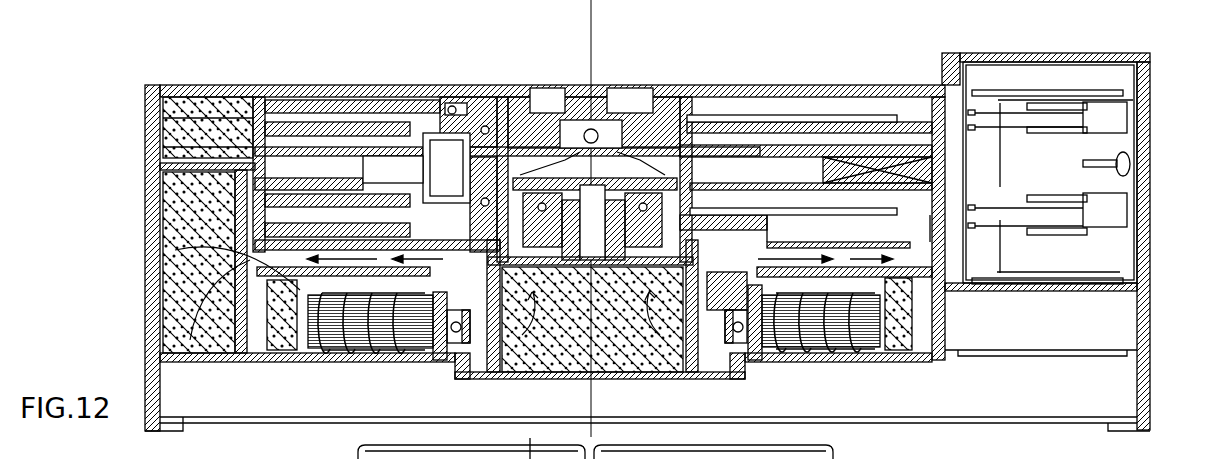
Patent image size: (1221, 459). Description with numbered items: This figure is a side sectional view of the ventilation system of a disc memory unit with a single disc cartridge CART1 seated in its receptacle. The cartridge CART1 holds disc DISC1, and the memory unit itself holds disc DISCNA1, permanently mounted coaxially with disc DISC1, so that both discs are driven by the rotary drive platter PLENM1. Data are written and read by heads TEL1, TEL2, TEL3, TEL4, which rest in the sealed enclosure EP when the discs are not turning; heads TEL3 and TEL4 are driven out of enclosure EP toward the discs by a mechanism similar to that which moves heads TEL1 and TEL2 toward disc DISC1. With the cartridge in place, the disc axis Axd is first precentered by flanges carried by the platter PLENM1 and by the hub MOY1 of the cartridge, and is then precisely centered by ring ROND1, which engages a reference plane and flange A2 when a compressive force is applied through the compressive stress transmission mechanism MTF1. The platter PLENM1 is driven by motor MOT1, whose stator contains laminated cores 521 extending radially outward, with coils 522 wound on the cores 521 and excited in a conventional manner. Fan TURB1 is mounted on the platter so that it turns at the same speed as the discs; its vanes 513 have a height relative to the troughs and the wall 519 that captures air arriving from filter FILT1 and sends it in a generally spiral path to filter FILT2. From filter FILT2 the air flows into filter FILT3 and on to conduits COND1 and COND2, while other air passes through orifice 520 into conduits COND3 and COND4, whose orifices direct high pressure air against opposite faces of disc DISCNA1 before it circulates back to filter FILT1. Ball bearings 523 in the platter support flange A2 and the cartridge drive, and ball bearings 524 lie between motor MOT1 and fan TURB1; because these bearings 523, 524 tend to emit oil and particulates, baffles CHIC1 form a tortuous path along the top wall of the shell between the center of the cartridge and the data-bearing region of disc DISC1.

The filter FILT1 is at (622, 370).
The filter FILT2 is at (222, 358).
The filter FILT3 is at (213, 105).
The conduit COND1 is at (272, 100).
The conduit COND2 is at (283, 128).
The conduit COND3 is at (165, 213).
The conduit COND4 is at (165, 262).
The hub MOY1 is at (418, 135).
The ring ROND1 is at (426, 170).
The baffles CHIC1 is at (725, 97).
The compressive stress transmission mechanism MTF1 is at (600, 110).
The axis of disc Axd is at (592, 45).
The flange A2 is at (692, 160).
The cartridge CART1 is at (795, 88).
The disc DISC1 is at (803, 120).
The disc DISCNA1 is at (790, 213).
The rotary drive platter PLENM1 is at (762, 222).
The sealed enclosure EP is at (1150, 125).
The head TEL1 is at (995, 118).
The head TEL2 is at (990, 130).
The head TEL3 is at (1000, 204).
The head TEL4 is at (1003, 232).
The fan TURB1 is at (298, 352).
The motor MOT1 is at (400, 348).
The vanes 513 is at (270, 352).
The wall 519 is at (300, 295).
The orifice 520 is at (300, 246).
The laminated cores 521 is at (875, 350).
The coils 522 is at (830, 350).
The ball bearings 523 is at (700, 305).
The ball bearings 524 is at (748, 350).